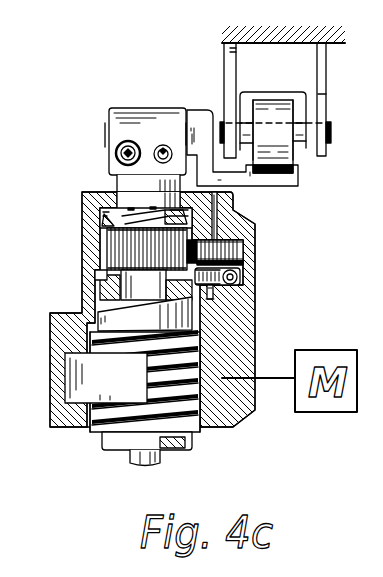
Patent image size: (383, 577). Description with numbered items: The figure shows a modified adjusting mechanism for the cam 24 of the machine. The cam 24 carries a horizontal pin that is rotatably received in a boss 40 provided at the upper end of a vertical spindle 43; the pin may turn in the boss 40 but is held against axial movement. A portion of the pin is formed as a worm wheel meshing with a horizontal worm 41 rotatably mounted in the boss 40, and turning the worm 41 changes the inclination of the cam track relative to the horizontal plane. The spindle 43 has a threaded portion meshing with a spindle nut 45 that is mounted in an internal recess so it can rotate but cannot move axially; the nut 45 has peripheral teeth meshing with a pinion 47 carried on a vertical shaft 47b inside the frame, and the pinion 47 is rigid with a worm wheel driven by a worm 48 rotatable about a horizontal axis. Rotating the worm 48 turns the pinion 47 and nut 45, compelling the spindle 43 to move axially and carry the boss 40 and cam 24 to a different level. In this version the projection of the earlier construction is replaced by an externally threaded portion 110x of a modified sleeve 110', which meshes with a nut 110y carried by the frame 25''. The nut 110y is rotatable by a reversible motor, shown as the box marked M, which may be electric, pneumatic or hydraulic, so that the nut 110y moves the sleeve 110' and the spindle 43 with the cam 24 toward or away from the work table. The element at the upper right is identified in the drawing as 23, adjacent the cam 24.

The roller 23 is at (292, 152).
The cam 24 is at (202, 118).
The boss 40 is at (155, 113).
The worm 41 is at (116, 155).
The frame 25'' is at (144, 309).
The spindle nut 45 is at (117, 245).
The pinion 47 is at (245, 242).
The worm 48 is at (246, 276).
The vertical shaft 47b is at (246, 296).
The modified sleeve 110' is at (145, 314).
The externally threaded portion 110x is at (96, 432).
The nut 110y is at (130, 389).
The spindle 43 is at (133, 453).